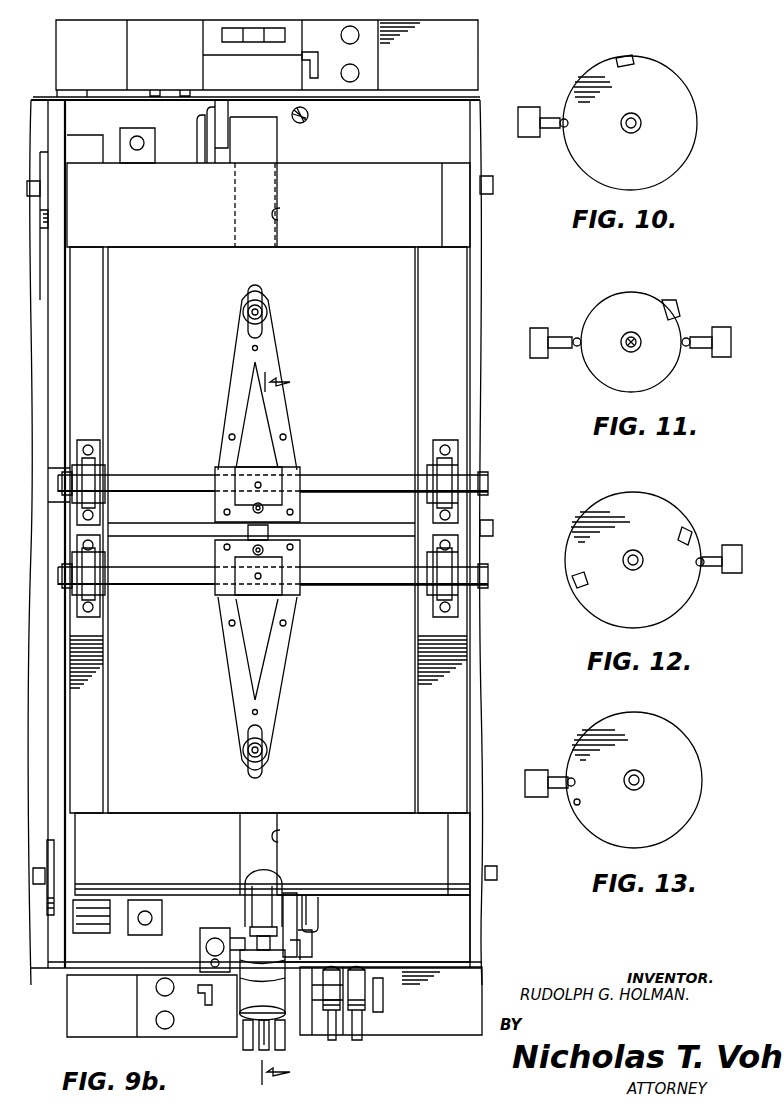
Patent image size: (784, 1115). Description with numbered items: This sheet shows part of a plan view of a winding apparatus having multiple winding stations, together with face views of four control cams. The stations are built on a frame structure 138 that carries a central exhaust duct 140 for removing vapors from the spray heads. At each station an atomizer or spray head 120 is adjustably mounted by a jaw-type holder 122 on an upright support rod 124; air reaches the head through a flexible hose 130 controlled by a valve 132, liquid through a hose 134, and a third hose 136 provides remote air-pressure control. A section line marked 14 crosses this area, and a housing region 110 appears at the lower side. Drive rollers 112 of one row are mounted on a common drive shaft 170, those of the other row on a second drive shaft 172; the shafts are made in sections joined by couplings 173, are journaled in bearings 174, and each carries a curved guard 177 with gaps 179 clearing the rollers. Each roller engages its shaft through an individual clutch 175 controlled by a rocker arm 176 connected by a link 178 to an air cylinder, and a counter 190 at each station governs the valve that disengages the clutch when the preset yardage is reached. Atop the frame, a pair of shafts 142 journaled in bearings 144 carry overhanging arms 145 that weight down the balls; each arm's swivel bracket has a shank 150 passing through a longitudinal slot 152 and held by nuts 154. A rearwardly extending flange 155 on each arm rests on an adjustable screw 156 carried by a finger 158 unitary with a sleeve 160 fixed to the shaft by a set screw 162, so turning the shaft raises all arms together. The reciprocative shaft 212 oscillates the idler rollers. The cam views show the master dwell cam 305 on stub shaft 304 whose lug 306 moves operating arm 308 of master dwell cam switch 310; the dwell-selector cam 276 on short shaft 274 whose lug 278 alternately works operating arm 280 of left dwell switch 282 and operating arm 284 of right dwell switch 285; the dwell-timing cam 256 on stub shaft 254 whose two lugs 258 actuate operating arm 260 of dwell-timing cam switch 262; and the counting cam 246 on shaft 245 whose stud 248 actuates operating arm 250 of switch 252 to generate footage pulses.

In FIG. 9B, the counter 190 is at (222, 40).
In FIG. 9B, the curved guard 177 is at (268, 529).
In FIG. 9B, the drive roller 112 is at (277, 146).
In FIG. 9B, the bearing 174 is at (140, 128).
In FIG. 9B, the link 178 is at (215, 114).
In FIG. 9B, the upright support rod 124 is at (308, 117).
In FIG. 9B, the drive shaft 170 is at (40, 189).
In FIG. 9B, the coupling 173 is at (42, 218).
In FIG. 9B, the clutch 175 is at (228, 172).
In FIG. 9B, the gap 179 is at (282, 210).
In FIG. 9B, the frame structure 138 is at (100, 741).
In FIG. 9B, the shaft 142 is at (389, 480).
In FIG. 9B, the bearing 144 is at (95, 480).
In FIG. 9B, the central exhaust duct 140 is at (62, 483).
In FIG. 9B, the reciprocative shaft 212 is at (493, 528).
In FIG. 9B, the overhanging arm 145 is at (236, 383).
In FIG. 9B, the longitudinal slot 152 is at (260, 332).
In FIG. 9B, the shank 150 is at (243, 312).
In FIG. 9B, the nut 154 is at (268, 309).
In FIG. 9B, the adjustable screw 156 is at (262, 512).
In FIG. 9B, the sleeve 160 is at (258, 470).
In FIG. 9B, the finger 158 is at (258, 492).
In FIG. 9B, the set screw 162 is at (258, 485).
In FIG. 9B, the rearwardly extending flange 155 is at (258, 537).
In FIG. 9B, the section line 14 is at (288, 728).
In FIG. 9B, the second drive shaft 172 is at (45, 869).
In FIG. 9B, the housing 110 is at (466, 923).
In FIG. 9B, the spray head 120 is at (250, 882).
In FIG. 9B, the jaw-type holder 122 is at (228, 927).
In FIG. 9B, the third hose 136 is at (243, 1052).
In FIG. 9B, the flexible hose 130 is at (284, 1045).
In FIG. 9B, the hose 134 is at (262, 1050).
In FIG. 9B, the valve 132 is at (383, 990).
In FIG. 9B, the rocker arm 176 is at (312, 942).
In FIG. 10, the master dwell cam 305 is at (680, 78).
In FIG. 10, the lug 306 is at (623, 54).
In FIG. 10, the stub shaft 304 is at (631, 133).
In FIG. 10, the operating arm 308 is at (549, 117).
In FIG. 10, the master dwell cam switch 310 is at (526, 107).
In FIG. 11, the dwell-selector cam 276 is at (628, 300).
In FIG. 11, the short shaft 274 is at (631, 353).
In FIG. 11, the lug 278 is at (673, 308).
In FIG. 11, the operating arm 280 is at (560, 337).
In FIG. 11, the left dwell switch 282 is at (535, 328).
In FIG. 11, the operating arm 284 is at (702, 337).
In FIG. 11, the right dwell switch 285 is at (722, 357).
In FIG. 12, the dwell-timing cam 256 is at (636, 505).
In FIG. 12, the stub shaft 254 is at (633, 571).
In FIG. 12, the lug 258 is at (690, 528).
In FIG. 12, the operating arm 260 is at (716, 556).
In FIG. 12, the dwell-timing cam switch 262 is at (732, 573).
In FIG. 13, the counting cam 246 is at (680, 743).
In FIG. 13, the shaft 245 is at (645, 780).
In FIG. 13, the stud 248 is at (581, 805).
In FIG. 13, the operating arm 250 is at (553, 777).
In FIG. 13, the switch 252 is at (536, 797).